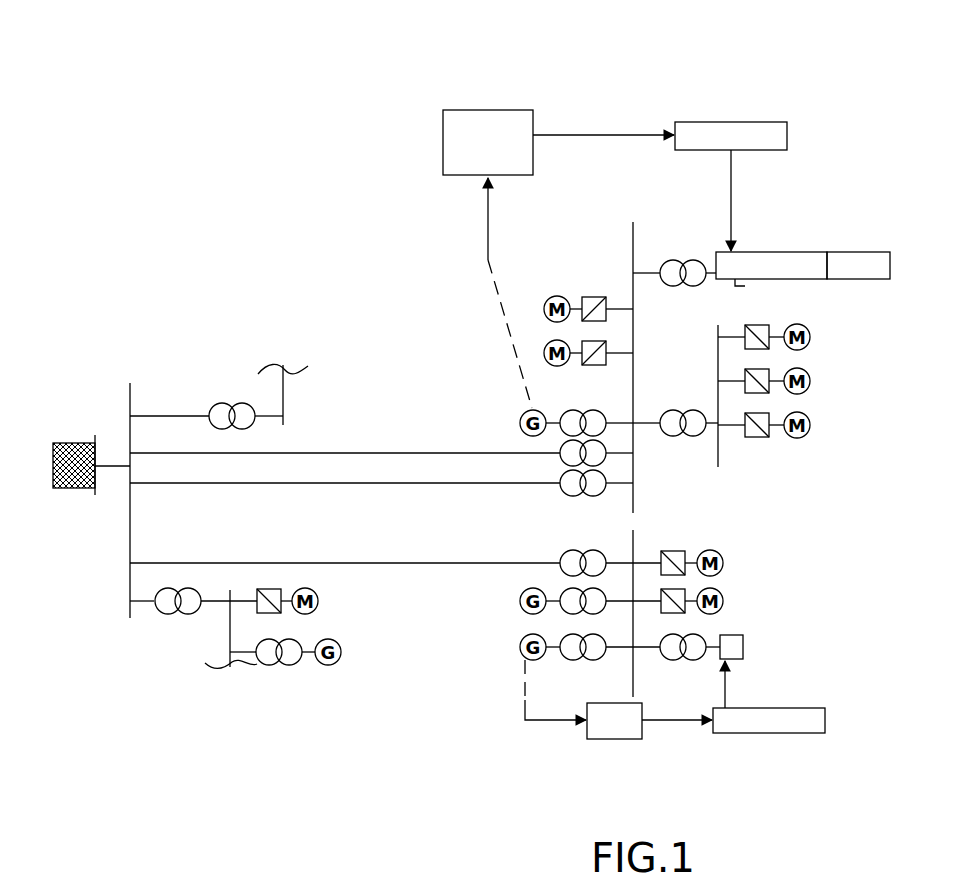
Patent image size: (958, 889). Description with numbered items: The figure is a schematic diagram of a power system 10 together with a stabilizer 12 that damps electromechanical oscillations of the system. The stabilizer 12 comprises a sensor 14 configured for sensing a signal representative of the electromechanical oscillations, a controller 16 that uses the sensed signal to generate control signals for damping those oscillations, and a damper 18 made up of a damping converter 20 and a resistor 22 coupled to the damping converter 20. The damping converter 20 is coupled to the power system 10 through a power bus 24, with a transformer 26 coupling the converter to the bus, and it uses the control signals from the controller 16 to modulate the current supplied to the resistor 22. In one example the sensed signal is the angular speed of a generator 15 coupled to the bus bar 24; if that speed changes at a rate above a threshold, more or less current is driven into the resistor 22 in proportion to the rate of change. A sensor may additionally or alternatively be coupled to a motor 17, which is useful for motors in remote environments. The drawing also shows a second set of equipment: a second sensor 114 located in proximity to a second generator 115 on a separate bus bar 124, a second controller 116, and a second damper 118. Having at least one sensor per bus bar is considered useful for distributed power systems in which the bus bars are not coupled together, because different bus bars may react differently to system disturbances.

The power system 10 is at (218, 287).
The stabilizer 12 is at (795, 82).
The sensor 14 is at (462, 110).
The generator 15 is at (530, 408).
The controller 16 is at (787, 130).
The motor 17 is at (723, 560).
The damper 18 is at (822, 226).
The damping converter 20 is at (762, 252).
The resistor 22 is at (874, 252).
The power bus 24 is at (640, 326).
The transformer 26 is at (677, 250).
The sensor 114 is at (610, 740).
The generator 115 is at (525, 660).
The controller 116 is at (755, 734).
The damper 118 is at (745, 645).
The bus bar 124 is at (634, 543).